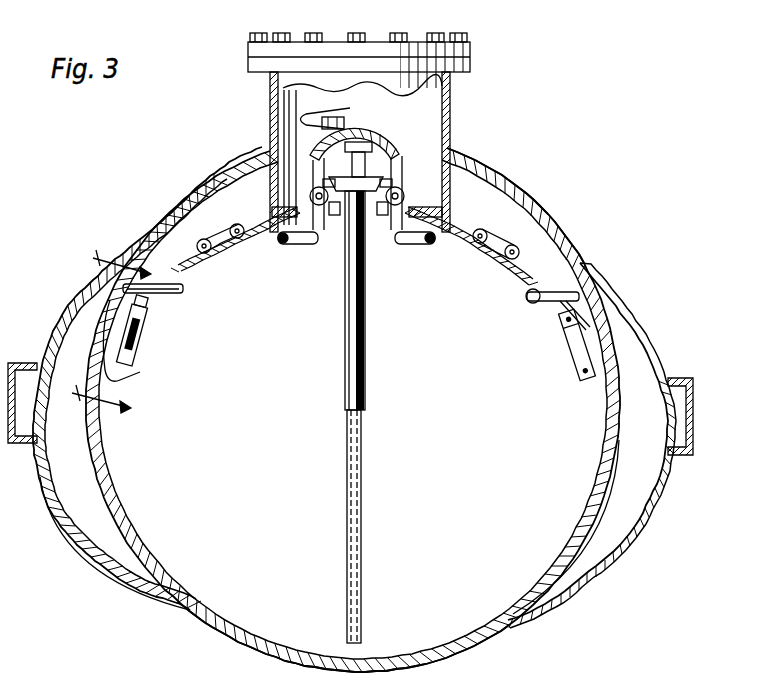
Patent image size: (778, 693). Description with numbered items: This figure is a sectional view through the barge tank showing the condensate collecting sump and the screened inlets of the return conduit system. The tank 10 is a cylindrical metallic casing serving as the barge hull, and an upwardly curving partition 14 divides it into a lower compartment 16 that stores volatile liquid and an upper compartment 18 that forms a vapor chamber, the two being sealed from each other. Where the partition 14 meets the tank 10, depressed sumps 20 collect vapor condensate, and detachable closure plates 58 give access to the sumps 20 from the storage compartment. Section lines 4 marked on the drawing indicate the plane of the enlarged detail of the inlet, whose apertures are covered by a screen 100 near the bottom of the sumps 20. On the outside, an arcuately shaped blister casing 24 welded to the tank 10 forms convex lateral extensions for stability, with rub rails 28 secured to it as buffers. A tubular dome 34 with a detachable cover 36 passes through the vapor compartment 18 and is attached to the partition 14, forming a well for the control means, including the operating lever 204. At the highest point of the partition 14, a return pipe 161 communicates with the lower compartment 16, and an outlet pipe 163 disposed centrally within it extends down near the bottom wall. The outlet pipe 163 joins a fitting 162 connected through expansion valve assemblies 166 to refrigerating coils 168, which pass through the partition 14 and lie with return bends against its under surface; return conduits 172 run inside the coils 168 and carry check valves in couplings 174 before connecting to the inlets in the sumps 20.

The tank 10 is at (490, 175).
The partition 14 is at (455, 232).
The lower compartment 16 is at (448, 634).
The upper compartment 18 is at (531, 222).
The sump 20 is at (146, 318).
The casing 24 is at (646, 333).
The rub rail 28 is at (693, 422).
The dome 34 is at (448, 118).
The cover 36 is at (375, 45).
The closure plate 58 is at (140, 348).
The screen 100 is at (110, 350).
The return pipe 161 is at (366, 240).
The fitting 162 is at (362, 148).
The outlet pipe 163 is at (366, 399).
The expansion valve assembly 166 is at (404, 172).
The refrigerating coil 168 is at (232, 252).
The return conduit 172 is at (506, 258).
The coupling 174 is at (401, 203).
The operating lever 204 is at (344, 108).
The section line 4- 4 is at (116, 333).